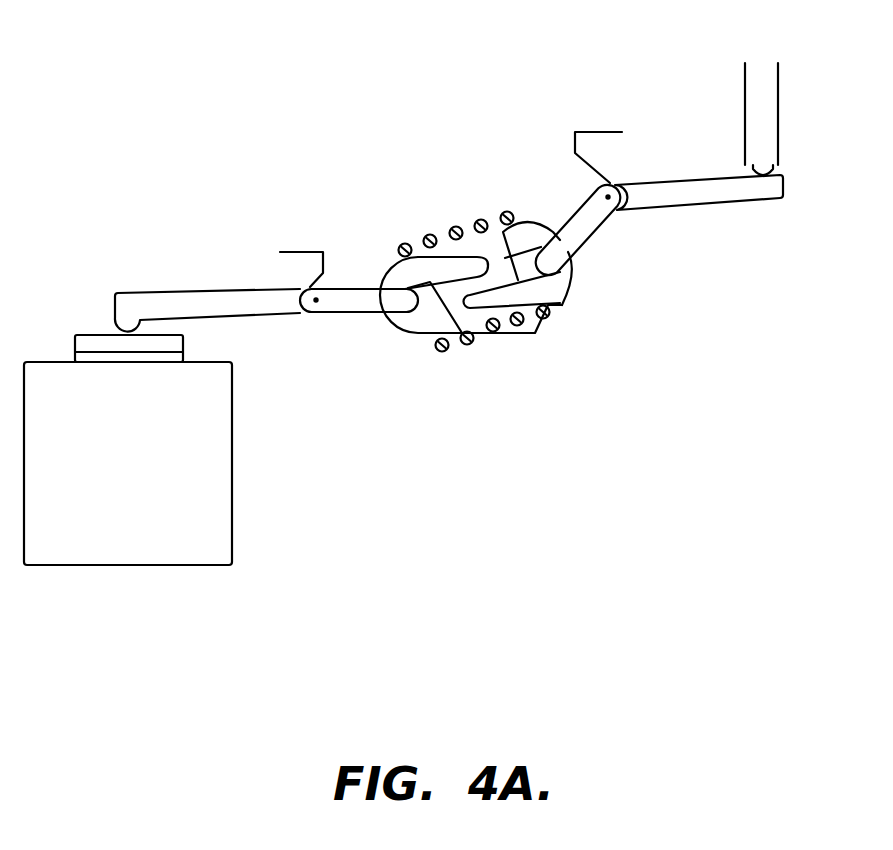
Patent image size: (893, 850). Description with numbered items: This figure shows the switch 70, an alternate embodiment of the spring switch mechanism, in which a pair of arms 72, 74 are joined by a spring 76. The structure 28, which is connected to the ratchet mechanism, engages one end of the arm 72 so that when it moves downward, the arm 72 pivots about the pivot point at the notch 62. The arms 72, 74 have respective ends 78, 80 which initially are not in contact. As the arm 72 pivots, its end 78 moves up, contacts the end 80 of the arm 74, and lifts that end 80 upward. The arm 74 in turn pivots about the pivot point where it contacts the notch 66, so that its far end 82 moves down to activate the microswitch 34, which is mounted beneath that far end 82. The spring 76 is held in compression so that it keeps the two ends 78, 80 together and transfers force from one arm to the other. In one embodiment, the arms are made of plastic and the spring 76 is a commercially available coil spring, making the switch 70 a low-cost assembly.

The switch 70 is at (528, 70).
The structure 28 is at (780, 107).
The notch 62 is at (623, 161).
The arm 72 is at (593, 220).
The arm 74 is at (352, 317).
The spring 76 is at (509, 213).
The end 78 is at (458, 333).
The end 80 is at (478, 266).
The far end 82 is at (131, 292).
The notch 66 is at (313, 240).
The microswitch 34 is at (203, 434).